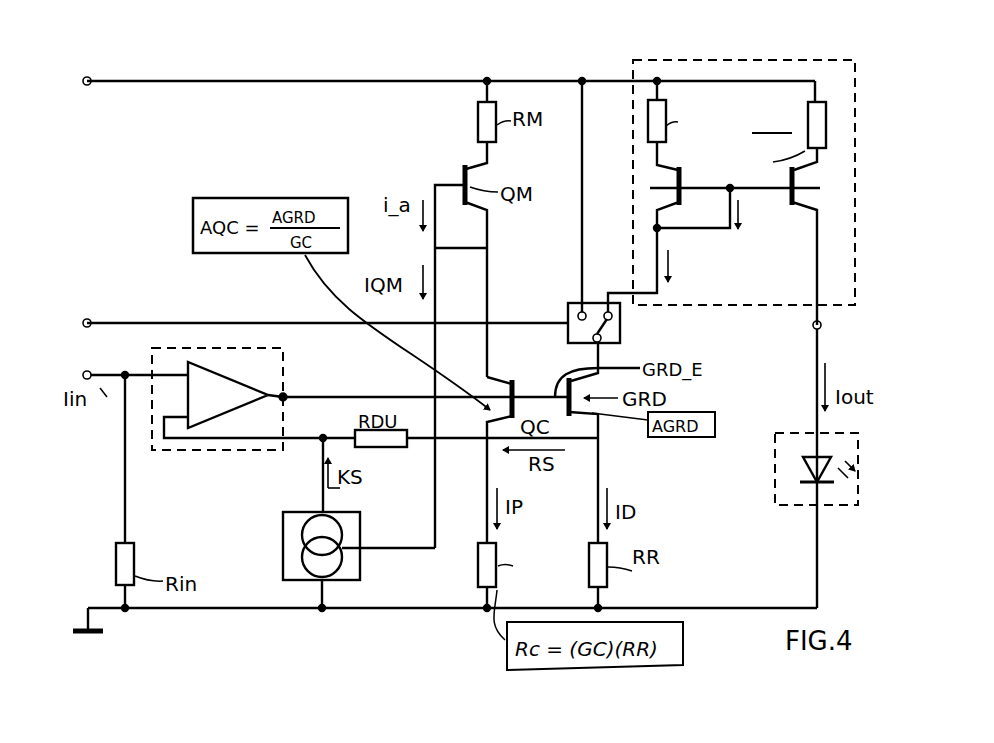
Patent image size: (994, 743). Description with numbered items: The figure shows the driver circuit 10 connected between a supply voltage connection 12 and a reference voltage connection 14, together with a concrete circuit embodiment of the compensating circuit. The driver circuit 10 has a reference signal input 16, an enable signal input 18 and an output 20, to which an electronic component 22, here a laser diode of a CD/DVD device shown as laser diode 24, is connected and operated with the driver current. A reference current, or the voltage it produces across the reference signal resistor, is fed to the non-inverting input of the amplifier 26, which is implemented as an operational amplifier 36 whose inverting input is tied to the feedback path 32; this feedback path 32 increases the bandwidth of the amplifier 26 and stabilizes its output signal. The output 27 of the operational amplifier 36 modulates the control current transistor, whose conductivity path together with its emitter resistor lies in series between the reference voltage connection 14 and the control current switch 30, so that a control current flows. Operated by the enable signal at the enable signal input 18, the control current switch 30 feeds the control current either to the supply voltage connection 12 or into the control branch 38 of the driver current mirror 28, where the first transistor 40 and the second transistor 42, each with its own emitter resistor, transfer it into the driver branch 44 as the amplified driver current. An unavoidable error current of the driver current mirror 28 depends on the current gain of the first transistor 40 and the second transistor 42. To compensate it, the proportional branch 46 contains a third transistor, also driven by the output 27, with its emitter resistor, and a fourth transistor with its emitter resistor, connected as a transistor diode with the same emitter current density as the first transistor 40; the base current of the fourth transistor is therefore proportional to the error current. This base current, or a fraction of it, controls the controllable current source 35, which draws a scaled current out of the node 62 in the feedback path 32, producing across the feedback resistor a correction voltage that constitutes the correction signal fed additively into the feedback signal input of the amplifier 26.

The driver circuit 10 is at (343, 64).
The supply voltage connection 12 is at (92, 78).
The reference voltage connection 14 is at (86, 604).
The reference signal input 16 is at (93, 376).
The enable signal input 18 is at (90, 318).
The output 20 is at (830, 328).
The electronic component 22 is at (790, 449).
The laser diode 24 is at (808, 455).
The amplifier 26 is at (286, 350).
The output of the operational amplifier 27 is at (290, 395).
The driver current mirror 28 is at (640, 58).
The control current switch 30 is at (622, 333).
The feedback path 32 is at (253, 417).
The controllable current source 35 is at (362, 573).
The operational amplifier 36 is at (226, 364).
The control branch 38 is at (720, 132).
The first transistor 40 is at (714, 196).
The second transistor 42 is at (825, 246).
The driver branch 44 is at (786, 246).
The proportional branch 46 is at (537, 569).
The node 62 is at (320, 438).